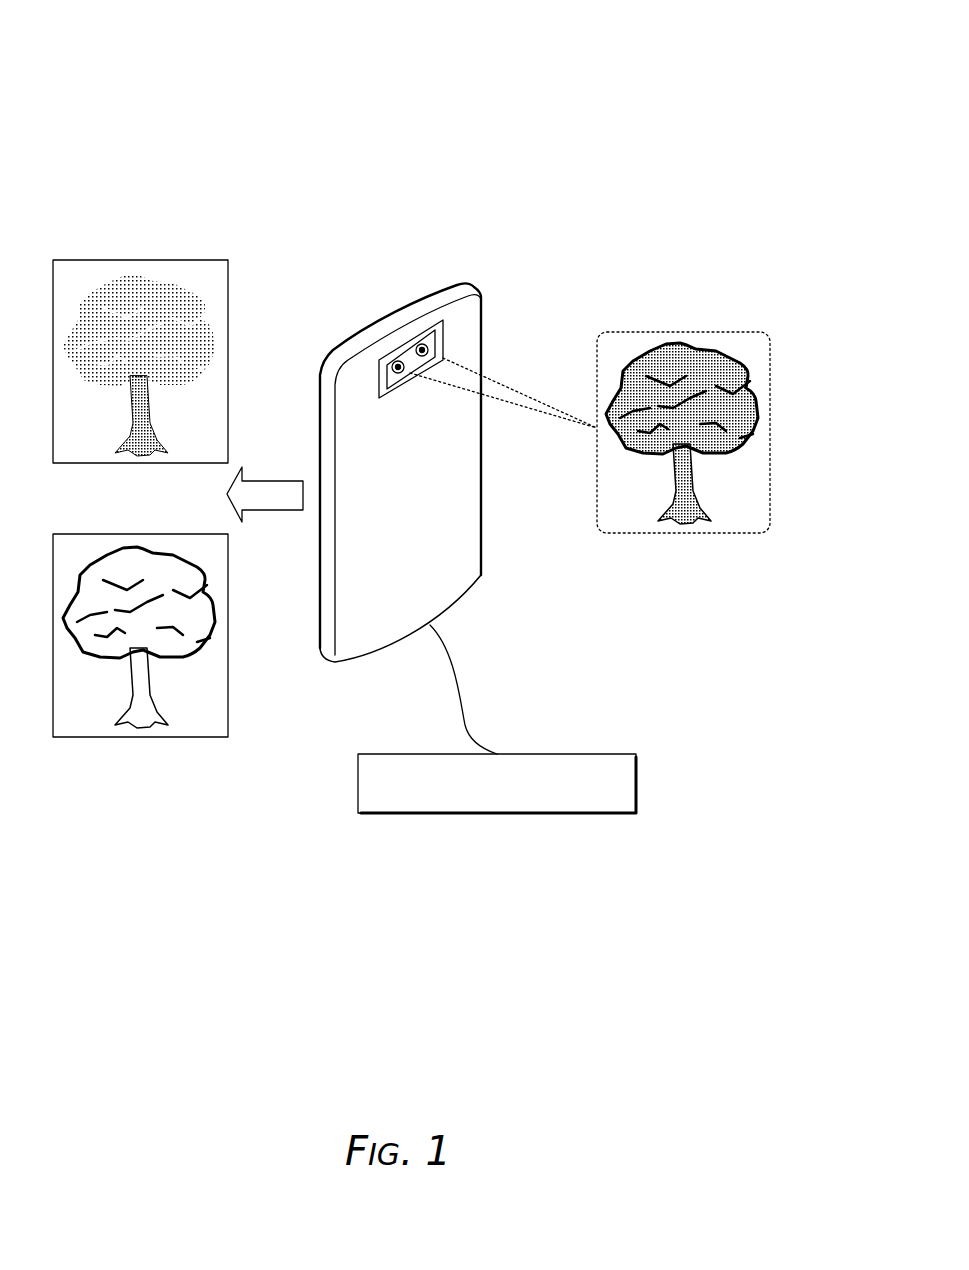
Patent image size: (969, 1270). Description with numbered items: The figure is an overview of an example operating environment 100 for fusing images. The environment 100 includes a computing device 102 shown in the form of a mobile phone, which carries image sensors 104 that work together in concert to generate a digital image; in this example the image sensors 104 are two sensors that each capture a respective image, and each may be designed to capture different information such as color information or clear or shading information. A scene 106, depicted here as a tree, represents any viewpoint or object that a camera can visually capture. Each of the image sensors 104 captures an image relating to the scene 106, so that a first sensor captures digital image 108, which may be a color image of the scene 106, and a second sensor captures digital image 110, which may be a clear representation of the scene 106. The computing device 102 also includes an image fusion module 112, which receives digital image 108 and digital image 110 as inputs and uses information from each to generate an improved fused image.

The operating environment 100 is at (710, 63).
The computing device 102 is at (462, 283).
The image sensors 104 is at (407, 337).
The scene 106 is at (683, 332).
The digital image 108 is at (140, 260).
The digital image 110 is at (140, 534).
The image fusion module 112 is at (497, 783).